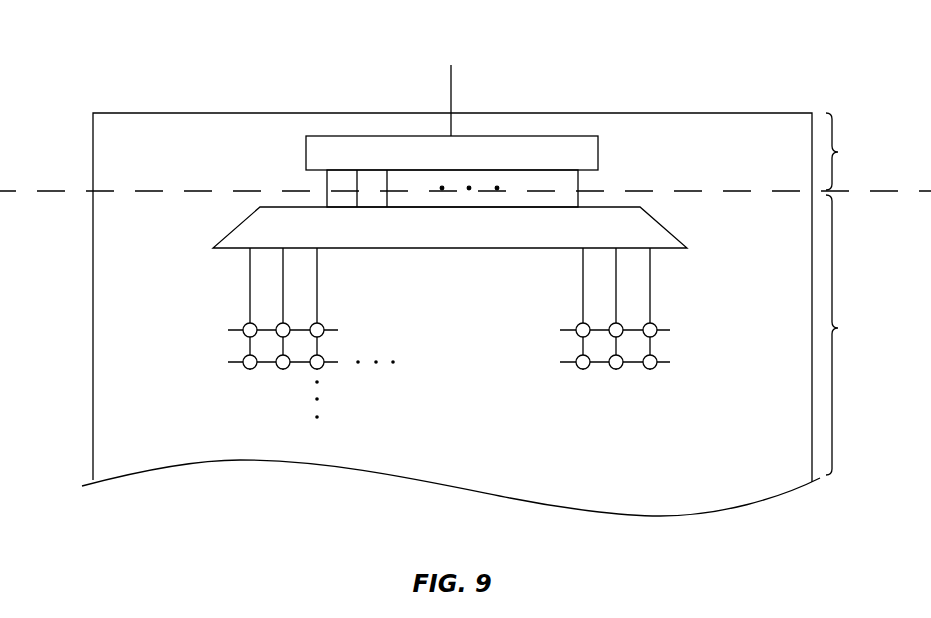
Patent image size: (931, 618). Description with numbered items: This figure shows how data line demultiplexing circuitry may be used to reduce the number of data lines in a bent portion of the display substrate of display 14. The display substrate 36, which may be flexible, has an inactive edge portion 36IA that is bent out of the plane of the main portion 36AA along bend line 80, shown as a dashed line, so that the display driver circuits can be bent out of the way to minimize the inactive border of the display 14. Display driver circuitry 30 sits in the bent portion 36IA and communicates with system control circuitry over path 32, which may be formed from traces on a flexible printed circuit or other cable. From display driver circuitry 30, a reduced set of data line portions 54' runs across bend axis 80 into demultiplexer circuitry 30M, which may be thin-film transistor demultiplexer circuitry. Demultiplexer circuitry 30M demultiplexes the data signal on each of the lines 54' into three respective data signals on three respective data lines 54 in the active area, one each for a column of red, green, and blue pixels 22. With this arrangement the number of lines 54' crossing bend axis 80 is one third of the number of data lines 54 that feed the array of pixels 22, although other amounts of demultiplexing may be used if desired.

The display 14 is at (640, 64).
The display substrate 36 is at (746, 113).
The bend line 80 is at (52, 190).
The path 32 is at (452, 87).
The display driver circuitry 30 is at (598, 148).
The data line portions 54' is at (416, 184).
The demultiplexer circuitry 30M is at (665, 228).
The data lines 54 is at (450, 309).
The pixels 22 is at (324, 330).
The inactive portion of display substrate 36IA is at (855, 151).
The main portion of display substrate 36AA is at (859, 335).